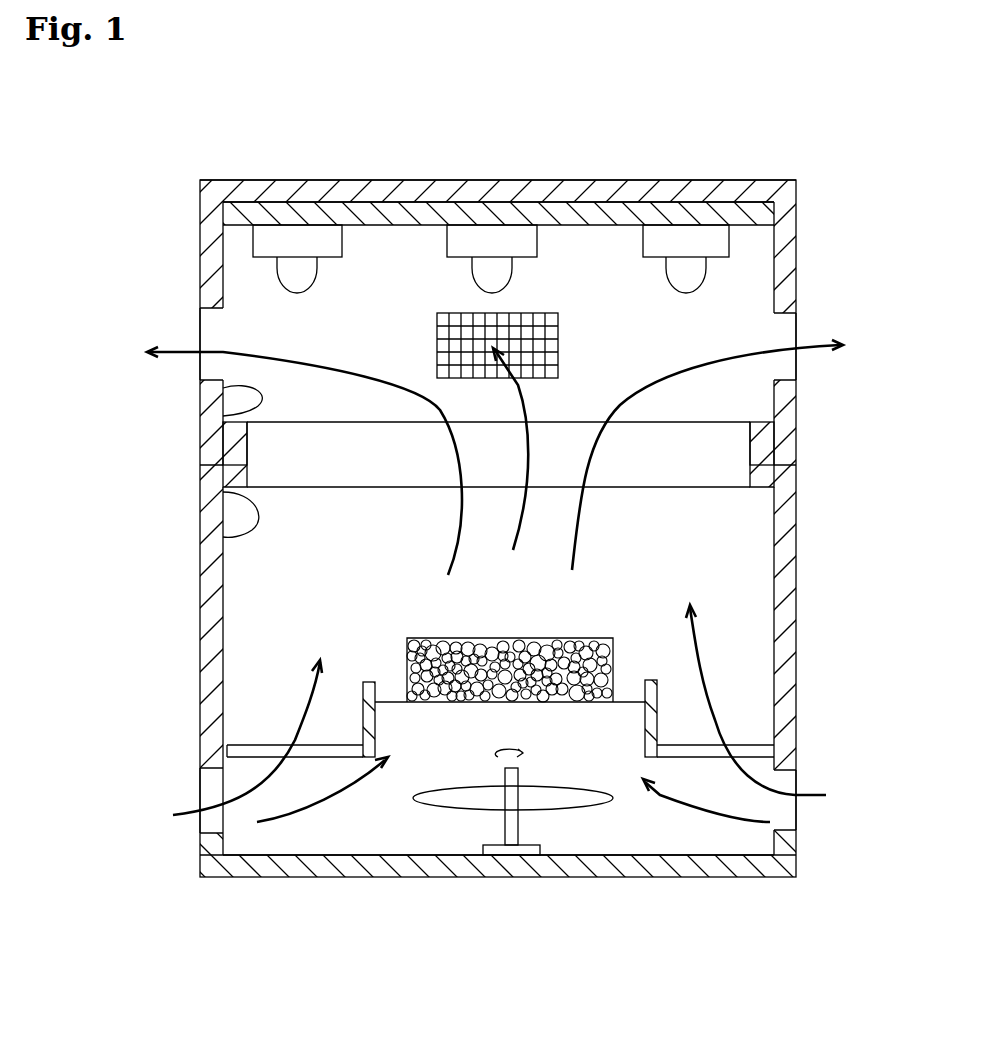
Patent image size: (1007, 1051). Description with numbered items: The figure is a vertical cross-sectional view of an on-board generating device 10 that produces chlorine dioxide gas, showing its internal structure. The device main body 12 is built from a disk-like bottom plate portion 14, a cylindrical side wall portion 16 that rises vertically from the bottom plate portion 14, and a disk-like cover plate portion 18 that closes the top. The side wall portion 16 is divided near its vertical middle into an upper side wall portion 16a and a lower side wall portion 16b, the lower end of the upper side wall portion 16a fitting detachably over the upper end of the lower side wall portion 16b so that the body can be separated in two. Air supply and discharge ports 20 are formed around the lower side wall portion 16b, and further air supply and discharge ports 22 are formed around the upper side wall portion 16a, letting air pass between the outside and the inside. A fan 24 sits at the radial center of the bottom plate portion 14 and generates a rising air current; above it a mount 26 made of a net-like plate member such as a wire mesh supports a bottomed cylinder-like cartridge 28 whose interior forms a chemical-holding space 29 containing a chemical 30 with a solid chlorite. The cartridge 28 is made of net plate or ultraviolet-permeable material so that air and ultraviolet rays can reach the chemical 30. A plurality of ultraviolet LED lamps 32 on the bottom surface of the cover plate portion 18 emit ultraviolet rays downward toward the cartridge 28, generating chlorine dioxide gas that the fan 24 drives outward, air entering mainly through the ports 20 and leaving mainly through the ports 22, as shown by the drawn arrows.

The on-board generating device 10 is at (892, 245).
The device main body 12 is at (582, 182).
The bottom plate portion 14 is at (337, 855).
The side wall portion 16 is at (107, 402).
The upper side wall portion 16a is at (222, 420).
The lower side wall portion 16b is at (223, 533).
The cover plate portion 18 is at (398, 190).
The air supply and discharge ports 20 is at (210, 788).
The air supply and discharge ports 22 is at (210, 312).
The fan 24 is at (553, 788).
The mount 26 is at (467, 707).
The cartridge 28 is at (613, 648).
The chemical-holding space 29 is at (433, 650).
The chemical 30 is at (488, 663).
The ultraviolet LED lamps 32 is at (305, 275).